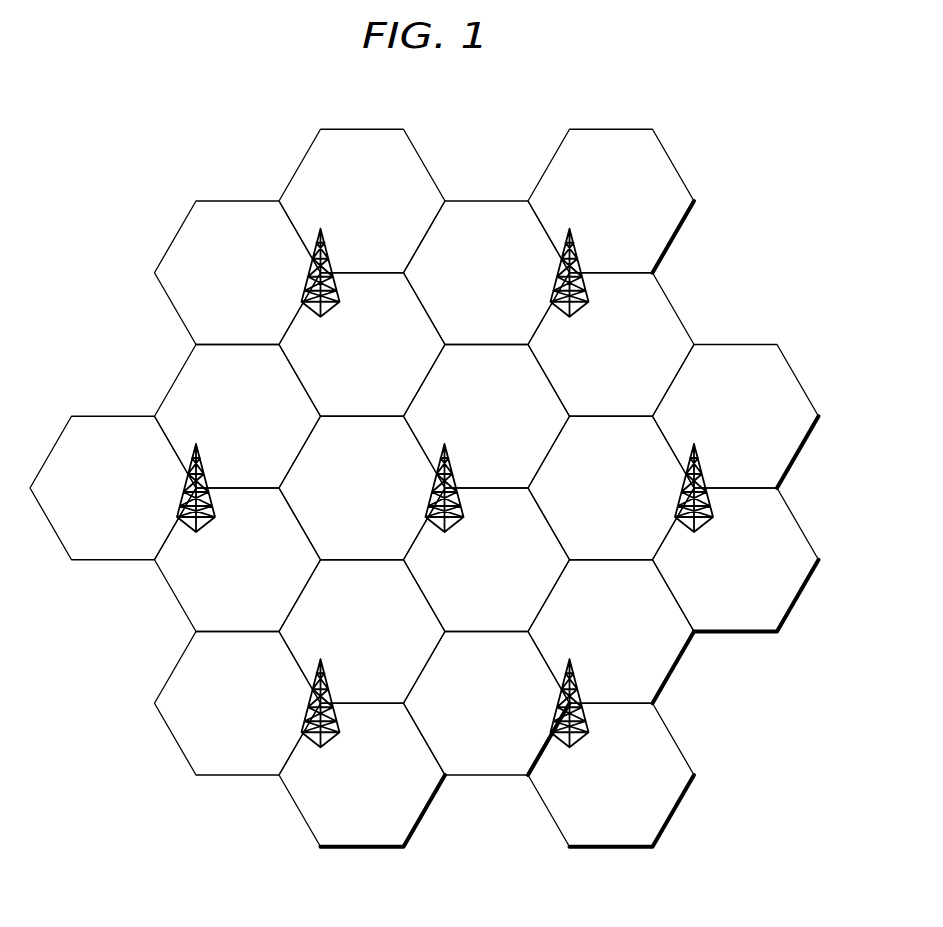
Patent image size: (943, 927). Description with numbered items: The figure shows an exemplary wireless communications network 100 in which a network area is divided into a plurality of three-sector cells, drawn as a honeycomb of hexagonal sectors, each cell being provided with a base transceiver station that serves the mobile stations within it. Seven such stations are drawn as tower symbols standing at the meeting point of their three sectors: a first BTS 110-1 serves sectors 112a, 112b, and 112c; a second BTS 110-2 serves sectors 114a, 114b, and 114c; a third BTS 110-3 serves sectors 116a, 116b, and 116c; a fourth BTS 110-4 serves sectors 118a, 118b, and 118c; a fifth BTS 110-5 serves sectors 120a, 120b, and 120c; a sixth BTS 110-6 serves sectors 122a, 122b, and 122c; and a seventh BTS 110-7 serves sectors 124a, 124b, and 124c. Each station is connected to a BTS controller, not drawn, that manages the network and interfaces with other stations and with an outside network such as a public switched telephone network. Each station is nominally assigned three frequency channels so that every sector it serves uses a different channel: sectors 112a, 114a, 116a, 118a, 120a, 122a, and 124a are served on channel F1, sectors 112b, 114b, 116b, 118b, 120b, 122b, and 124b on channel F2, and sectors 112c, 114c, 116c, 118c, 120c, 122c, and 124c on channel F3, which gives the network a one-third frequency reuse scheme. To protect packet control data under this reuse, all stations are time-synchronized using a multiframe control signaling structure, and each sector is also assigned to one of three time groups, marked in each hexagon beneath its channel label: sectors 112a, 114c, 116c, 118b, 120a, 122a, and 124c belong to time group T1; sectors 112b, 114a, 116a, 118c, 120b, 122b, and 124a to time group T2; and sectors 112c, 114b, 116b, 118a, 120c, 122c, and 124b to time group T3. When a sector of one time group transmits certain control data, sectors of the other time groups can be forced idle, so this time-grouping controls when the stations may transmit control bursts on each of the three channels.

The cellular communication system 100 is at (242, 100).
The first BTS 110-1 is at (281, 264).
The second BTS 110-2 is at (528, 262).
The third BTS 110-3 is at (157, 477).
The fourth BTS 110-4 is at (404, 479).
The fifth BTS 110-5 is at (654, 476).
The sixth BTS 110-6 is at (281, 693).
The seventh BTS 110-7 is at (529, 693).
The sector 112a is at (362, 174).
The sector 112b is at (213, 273).
The sector 112c is at (336, 345).
The sector 114a is at (637, 201).
The sector 114b is at (487, 243).
The sector 114c is at (633, 345).
The sector 116a is at (214, 417).
The sector 116b is at (113, 517).
The sector 116c is at (264, 560).
The sector 118a is at (456, 417).
The sector 118b is at (336, 488).
The sector 118c is at (456, 560).
The sector 120a is at (759, 417).
The sector 120b is at (583, 488).
The sector 120c is at (763, 560).
The sector 122a is at (336, 632).
The sector 122b is at (238, 734).
The sector 122c is at (362, 805).
The sector 124a is at (638, 632).
The sector 124b is at (487, 734).
The sector 124c is at (634, 775).